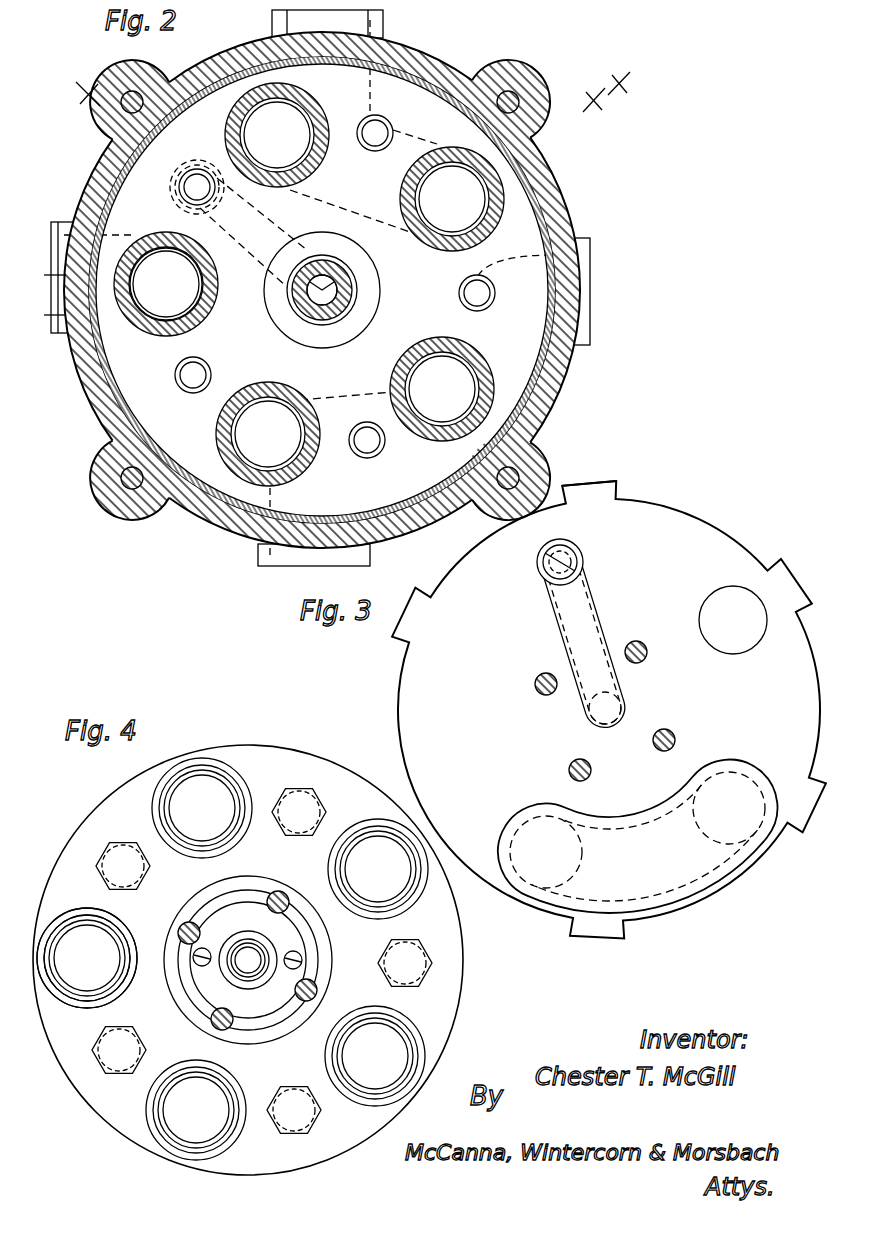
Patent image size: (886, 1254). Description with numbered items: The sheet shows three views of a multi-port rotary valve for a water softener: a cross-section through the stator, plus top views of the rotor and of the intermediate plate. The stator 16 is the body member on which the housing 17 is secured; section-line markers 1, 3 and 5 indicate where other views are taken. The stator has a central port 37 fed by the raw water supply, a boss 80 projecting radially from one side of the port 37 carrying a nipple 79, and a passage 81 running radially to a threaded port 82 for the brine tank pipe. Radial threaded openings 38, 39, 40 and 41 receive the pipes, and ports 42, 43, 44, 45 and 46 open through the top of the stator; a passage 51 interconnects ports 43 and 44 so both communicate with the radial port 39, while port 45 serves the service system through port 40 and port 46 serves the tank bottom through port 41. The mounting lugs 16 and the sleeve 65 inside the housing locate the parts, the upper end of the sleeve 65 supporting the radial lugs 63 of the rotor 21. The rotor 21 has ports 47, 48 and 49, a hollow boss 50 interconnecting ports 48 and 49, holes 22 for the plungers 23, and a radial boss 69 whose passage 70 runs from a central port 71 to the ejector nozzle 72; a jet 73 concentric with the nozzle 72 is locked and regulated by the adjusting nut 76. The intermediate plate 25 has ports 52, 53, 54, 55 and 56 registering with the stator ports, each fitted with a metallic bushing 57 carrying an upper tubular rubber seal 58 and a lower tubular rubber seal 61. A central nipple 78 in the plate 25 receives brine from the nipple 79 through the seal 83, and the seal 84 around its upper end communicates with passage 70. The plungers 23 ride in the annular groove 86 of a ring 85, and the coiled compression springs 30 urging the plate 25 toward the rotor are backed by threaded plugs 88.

In FIG. 2, the section line 1 is at (324, 201).
In FIG. 2, the section line 3 is at (619, 92).
In FIG. 2, the section line 5 is at (84, 89).
In FIG. 2, the stator 16 is at (334, 290).
In FIG. 2, the housing 17 is at (558, 400).
In FIG. 3, the rotor 21 is at (668, 512).
In FIG. 3, the holes 22 is at (676, 737).
In FIG. 3, the plungers 23 is at (668, 751).
In FIG. 4, the plungers 23 is at (318, 988).
In FIG. 4, the intermediate plate 25 is at (458, 1010).
In FIG. 2, the coiled compression springs 30 is at (205, 364).
In FIG. 2, the central port 37 is at (332, 342).
In FIG. 2, the radial threaded opening 38 is at (64, 233).
In FIG. 2, the radial port 39 is at (385, 22).
In FIG. 2, the radial port 40 is at (557, 255).
In FIG. 2, the radial port 41 is at (253, 537).
In FIG. 2, the stator port 42 is at (150, 312).
In FIG. 2, the stator port 43 is at (303, 118).
In FIG. 2, the stator port 44 is at (440, 227).
In FIG. 2, the stator port 45 is at (437, 422).
In FIG. 2, the stator port 46 is at (263, 407).
In FIG. 3, the rotor port 47 is at (722, 650).
In FIG. 3, the rotor port 48 is at (742, 780).
In FIG. 3, the rotor port 49 is at (537, 822).
In FIG. 3, the hollow boss 50 is at (614, 820).
In FIG. 2, the passage 51 is at (337, 203).
In FIG. 4, the intermediate plate port 52 is at (115, 927).
In FIG. 4, the intermediate plate port 53 is at (222, 785).
In FIG. 4, the intermediate plate port 54 is at (405, 895).
In FIG. 4, the intermediate plate port 55 is at (400, 1040).
In FIG. 4, the intermediate plate port 56 is at (222, 1090).
In FIG. 4, the metallic bushing 57 is at (125, 985).
In FIG. 4, the tubular rubber seal 58 is at (92, 1000).
In FIG. 2, the tubular rubber seal 61 is at (202, 302).
In FIG. 3, the radial lugs 63 is at (618, 485).
In FIG. 2, the sleeve 65 is at (130, 400).
In FIG. 3, the radial boss 69 is at (598, 613).
In FIG. 3, the passage 70 is at (568, 628).
In FIG. 3, the central port 71 is at (580, 712).
In FIG. 3, the ejector nozzle 72 is at (543, 573).
In FIG. 3, the jet 73 is at (577, 550).
In FIG. 3, the adjusting nut 76 is at (550, 540).
In FIG. 4, the nipple 78 is at (255, 942).
In FIG. 2, the nipple 79 is at (305, 317).
In FIG. 2, the boss 80 is at (278, 297).
In FIG. 2, the passage 81 is at (250, 245).
In FIG. 2, the threaded port 82 is at (203, 158).
In FIG. 2, the tubular rubber seal 83 is at (355, 298).
In FIG. 4, the tubular rubber seal 84 is at (250, 983).
In FIG. 4, the ring 85 is at (330, 935).
In FIG. 4, the annular groove 86 is at (318, 960).
In FIG. 4, the plugs 88 is at (125, 843).